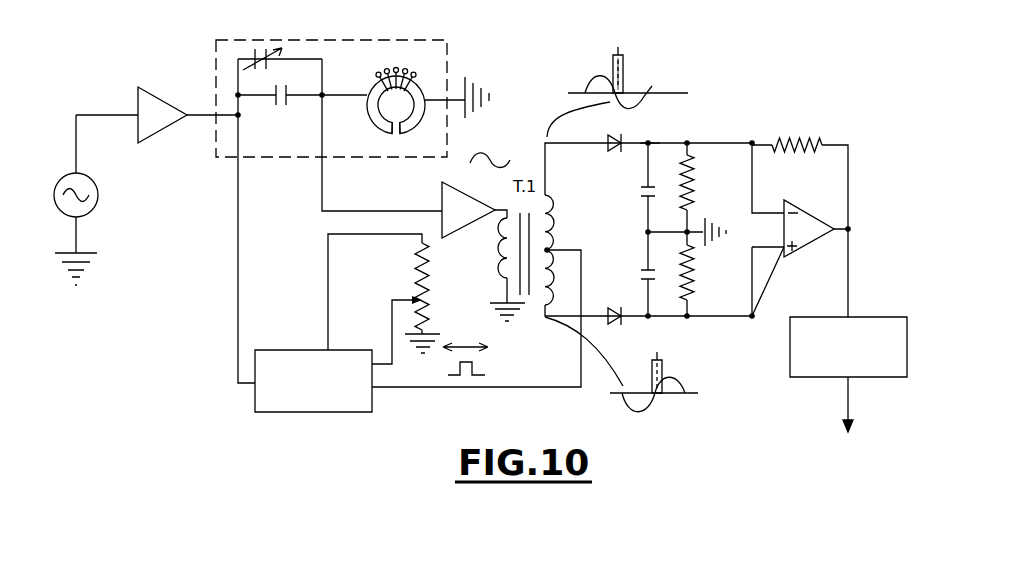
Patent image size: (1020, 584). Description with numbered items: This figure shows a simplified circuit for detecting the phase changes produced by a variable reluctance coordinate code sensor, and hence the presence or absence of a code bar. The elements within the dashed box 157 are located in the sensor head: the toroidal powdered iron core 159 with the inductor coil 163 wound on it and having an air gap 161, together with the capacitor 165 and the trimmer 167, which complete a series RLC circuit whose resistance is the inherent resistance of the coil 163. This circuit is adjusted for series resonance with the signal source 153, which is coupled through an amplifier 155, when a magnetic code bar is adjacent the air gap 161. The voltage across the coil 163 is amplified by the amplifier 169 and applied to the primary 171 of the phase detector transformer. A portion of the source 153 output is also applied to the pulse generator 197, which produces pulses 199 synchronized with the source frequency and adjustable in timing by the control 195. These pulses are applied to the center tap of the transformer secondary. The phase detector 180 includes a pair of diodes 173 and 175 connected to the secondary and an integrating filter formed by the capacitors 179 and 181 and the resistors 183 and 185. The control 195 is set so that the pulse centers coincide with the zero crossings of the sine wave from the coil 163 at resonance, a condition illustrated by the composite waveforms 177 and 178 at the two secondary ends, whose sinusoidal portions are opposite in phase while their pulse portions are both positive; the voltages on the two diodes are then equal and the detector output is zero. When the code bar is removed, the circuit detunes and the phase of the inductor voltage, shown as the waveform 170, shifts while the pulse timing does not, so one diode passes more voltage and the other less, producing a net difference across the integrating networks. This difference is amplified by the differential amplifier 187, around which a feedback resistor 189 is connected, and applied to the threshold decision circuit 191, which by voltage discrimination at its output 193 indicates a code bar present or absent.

The signal source 153 is at (98, 196).
The amplifier 155 is at (140, 87).
The dashed box 157 is at (320, 38).
The toroidal powdered iron core 159 is at (377, 131).
The air gap 161 is at (397, 136).
The inductor coil 163 is at (398, 78).
The capacitor 165 is at (287, 91).
The trimmer 167 is at (243, 68).
The amplifier 169 is at (442, 205).
The waveform 170 is at (497, 208).
The transformer primary winding 171 is at (500, 265).
The diode 173 is at (622, 152).
The diode 175 is at (618, 310).
The waveform 177 is at (625, 78).
The waveform 178 is at (660, 378).
The capacitor 179 is at (640, 186).
The phase detector 180 is at (656, 129).
The capacitor 181 is at (645, 268).
The resistor 183 is at (712, 181).
The resistor 185 is at (692, 272).
The differential amplifier 187 is at (803, 215).
The feedback resistor 189 is at (810, 142).
The threshold decision circuit 191 is at (870, 318).
The output 193 is at (846, 397).
The control 195 is at (415, 270).
The pulse generator 197 is at (303, 350).
The pulses 199 is at (472, 363).